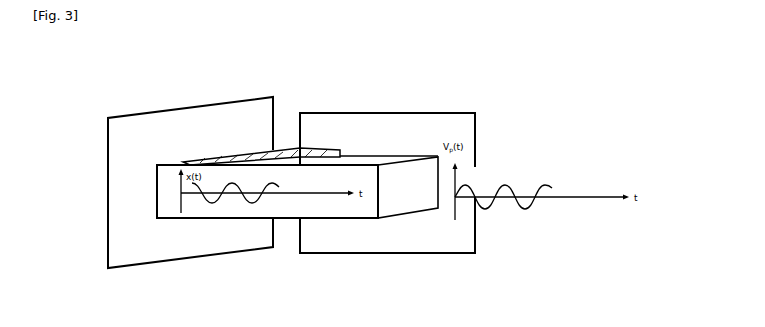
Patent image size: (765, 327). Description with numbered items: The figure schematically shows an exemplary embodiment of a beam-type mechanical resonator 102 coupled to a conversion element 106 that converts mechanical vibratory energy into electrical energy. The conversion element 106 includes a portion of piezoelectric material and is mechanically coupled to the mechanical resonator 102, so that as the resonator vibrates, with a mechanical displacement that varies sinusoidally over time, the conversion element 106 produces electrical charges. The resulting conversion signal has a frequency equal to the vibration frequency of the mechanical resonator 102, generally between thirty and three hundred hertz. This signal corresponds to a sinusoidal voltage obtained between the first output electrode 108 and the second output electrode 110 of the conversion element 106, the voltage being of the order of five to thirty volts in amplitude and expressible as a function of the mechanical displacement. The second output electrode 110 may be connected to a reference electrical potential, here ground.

The mechanical resonator 102 is at (154, 192).
The conversion element 106 is at (284, 146).
The first output electrode 108 is at (318, 113).
The second output electrode 110 is at (300, 219).